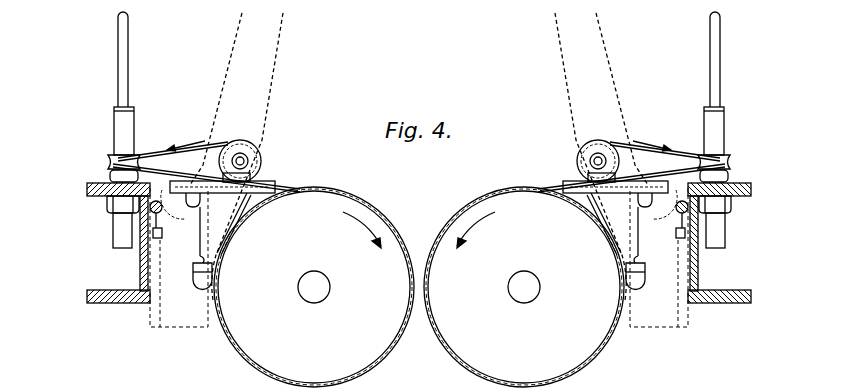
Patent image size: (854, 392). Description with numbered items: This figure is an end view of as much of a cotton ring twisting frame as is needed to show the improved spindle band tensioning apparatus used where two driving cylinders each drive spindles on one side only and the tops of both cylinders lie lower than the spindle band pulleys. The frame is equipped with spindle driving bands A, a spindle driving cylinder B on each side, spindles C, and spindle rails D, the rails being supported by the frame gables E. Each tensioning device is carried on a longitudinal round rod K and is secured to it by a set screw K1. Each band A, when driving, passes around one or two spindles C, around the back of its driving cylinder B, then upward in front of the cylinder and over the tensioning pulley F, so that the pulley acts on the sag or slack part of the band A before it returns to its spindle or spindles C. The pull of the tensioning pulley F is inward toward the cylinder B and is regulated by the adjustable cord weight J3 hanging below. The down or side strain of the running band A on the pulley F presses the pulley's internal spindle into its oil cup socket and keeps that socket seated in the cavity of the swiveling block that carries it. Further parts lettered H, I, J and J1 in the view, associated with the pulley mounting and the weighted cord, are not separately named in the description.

The spindle driving band A is at (419, 161).
The spindle driving cylinder B is at (419, 287).
The spindle C is at (414, 130).
The spindle rail D is at (88, 197).
The frame gable E is at (279, 38).
The tensioning pulley F is at (260, 152).
The pulley bracket H is at (255, 170).
The frame plate I is at (279, 177).
The guide hook J is at (203, 204).
The hanger rod J1 is at (199, 240).
The adjustable cord weight J3 is at (204, 290).
The longitudinal round rod K is at (193, 211).
The set screw K1 is at (156, 240).